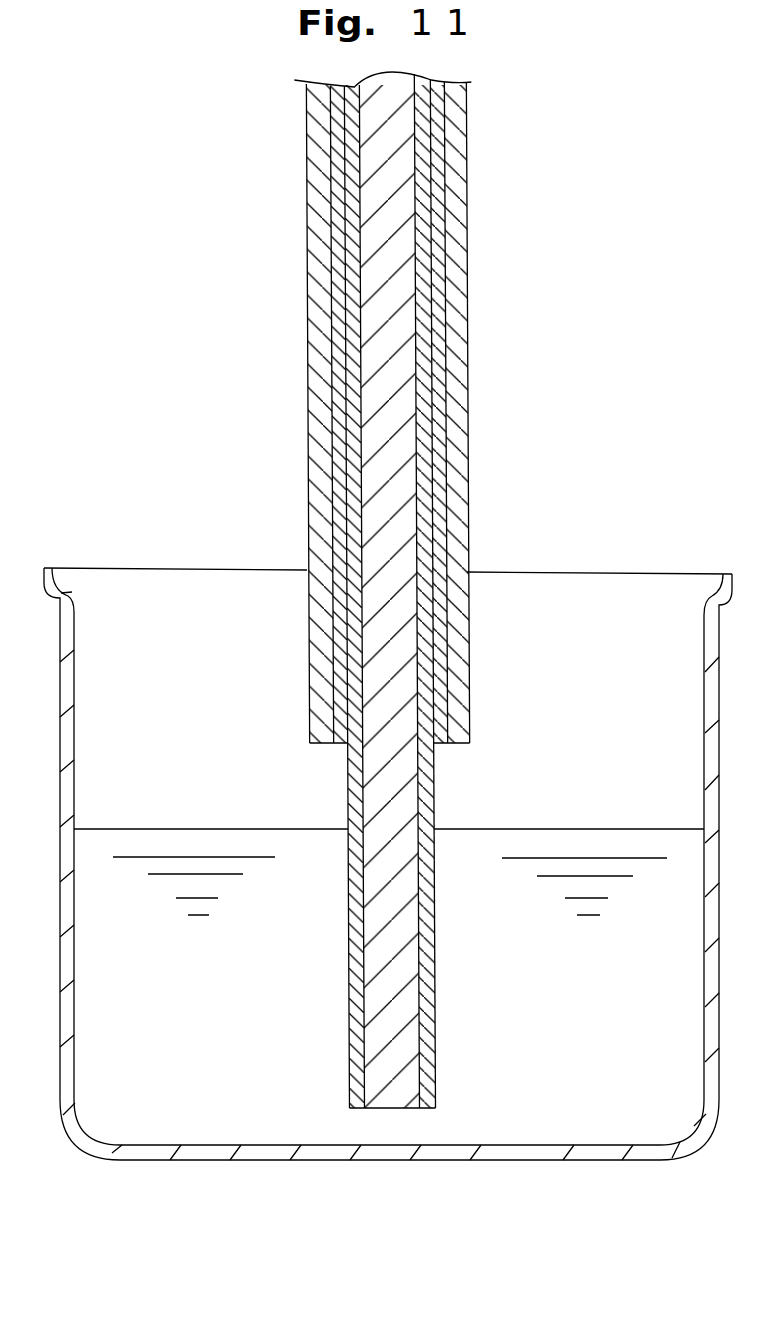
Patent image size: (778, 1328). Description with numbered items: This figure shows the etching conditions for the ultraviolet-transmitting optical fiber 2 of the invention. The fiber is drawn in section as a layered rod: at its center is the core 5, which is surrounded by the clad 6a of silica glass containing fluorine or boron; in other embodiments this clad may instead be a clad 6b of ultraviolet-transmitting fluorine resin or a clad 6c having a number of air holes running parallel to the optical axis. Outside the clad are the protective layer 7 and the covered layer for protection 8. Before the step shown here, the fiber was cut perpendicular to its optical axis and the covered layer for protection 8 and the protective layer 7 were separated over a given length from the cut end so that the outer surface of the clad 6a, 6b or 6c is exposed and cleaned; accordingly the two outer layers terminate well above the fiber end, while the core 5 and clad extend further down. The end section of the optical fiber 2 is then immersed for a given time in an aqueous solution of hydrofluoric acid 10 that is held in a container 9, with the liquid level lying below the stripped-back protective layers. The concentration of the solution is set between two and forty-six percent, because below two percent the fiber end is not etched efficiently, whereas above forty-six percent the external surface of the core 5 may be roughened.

The optical fiber 2 is at (203, 293).
The core 5 is at (372, 343).
The clad 6a is at (362, 395).
The clad 6b is at (314, 414).
The clad 6c is at (427, 925).
The protective layer 7 is at (337, 497).
The covered layer for protection 8 is at (326, 566).
The container 9 is at (545, 1158).
The aqueous solution of hydrofluoric acid 10 is at (648, 912).